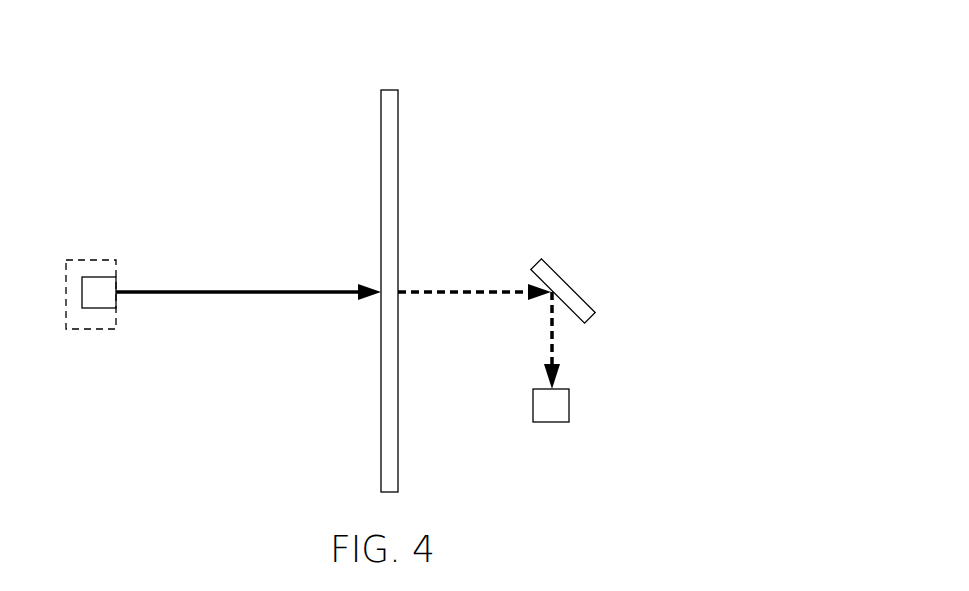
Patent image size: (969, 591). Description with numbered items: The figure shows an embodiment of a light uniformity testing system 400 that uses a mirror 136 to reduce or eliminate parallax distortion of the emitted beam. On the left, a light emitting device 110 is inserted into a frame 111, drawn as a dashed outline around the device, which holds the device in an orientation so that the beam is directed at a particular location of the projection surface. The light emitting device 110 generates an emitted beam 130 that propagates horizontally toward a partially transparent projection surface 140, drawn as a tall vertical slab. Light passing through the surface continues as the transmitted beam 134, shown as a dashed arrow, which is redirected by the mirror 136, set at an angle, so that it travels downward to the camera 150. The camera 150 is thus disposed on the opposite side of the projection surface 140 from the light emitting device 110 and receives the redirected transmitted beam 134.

The light uniformity testing system 400 is at (572, 56).
The frame 111 is at (68, 260).
The light emitting device 110 is at (98, 308).
The emitted beam 130 is at (222, 294).
The projection surface 140 is at (398, 110).
The transmitted beam 134 is at (495, 290).
The mirror 136 is at (590, 302).
The camera 150 is at (569, 403).